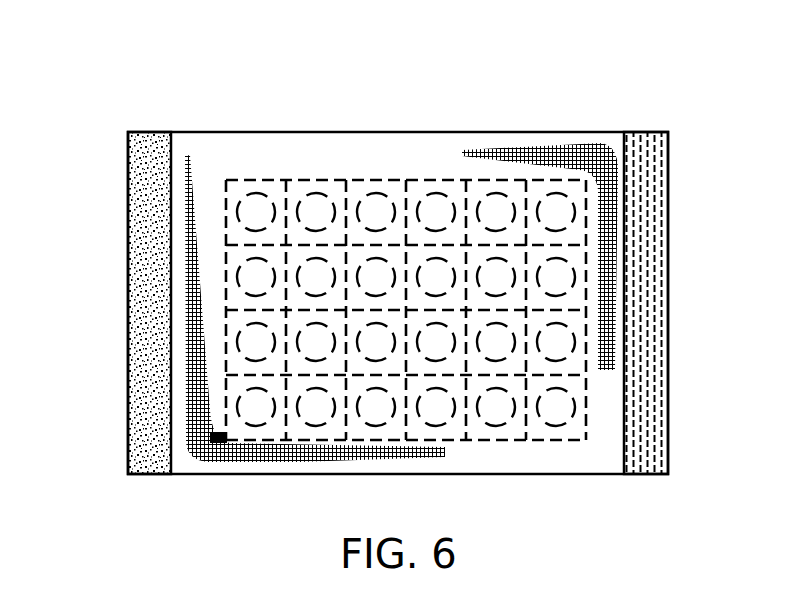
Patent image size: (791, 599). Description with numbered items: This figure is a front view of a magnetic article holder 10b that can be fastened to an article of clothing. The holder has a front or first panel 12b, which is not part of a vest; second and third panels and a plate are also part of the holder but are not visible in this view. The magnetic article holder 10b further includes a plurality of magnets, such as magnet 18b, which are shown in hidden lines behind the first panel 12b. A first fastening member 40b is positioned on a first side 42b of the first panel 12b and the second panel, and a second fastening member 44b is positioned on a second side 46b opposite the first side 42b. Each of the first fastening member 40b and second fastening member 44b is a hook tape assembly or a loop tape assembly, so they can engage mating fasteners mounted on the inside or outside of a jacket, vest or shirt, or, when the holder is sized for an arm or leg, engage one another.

The magnetic article holder 10b is at (136, 72).
The first panel 12b is at (420, 147).
The magnet 18b is at (316, 208).
The first fastening member 40b is at (156, 126).
The first side 42b is at (127, 305).
The second fastening member 44b is at (643, 125).
The second side 46b is at (672, 287).